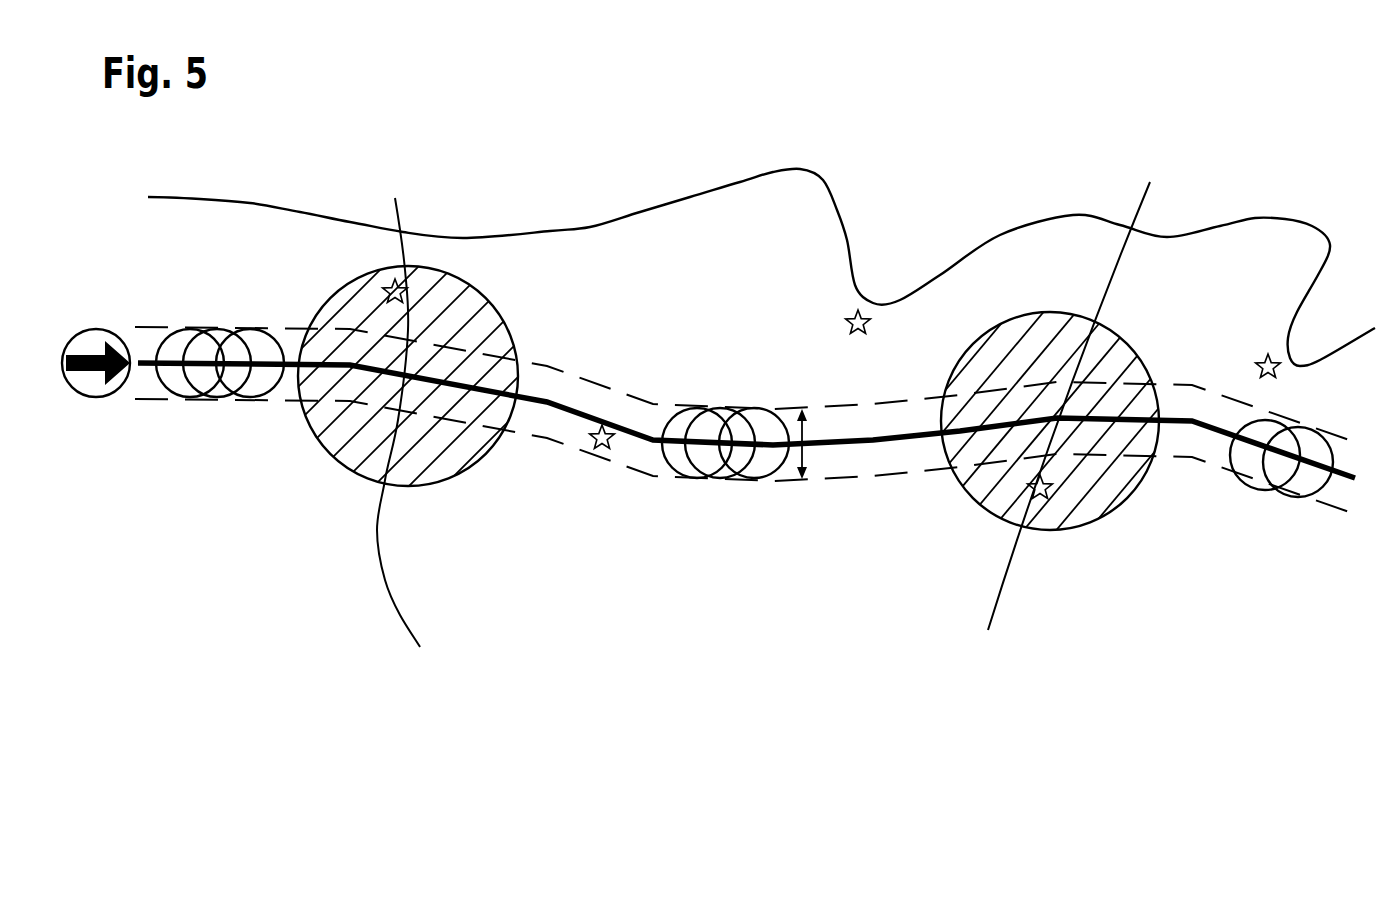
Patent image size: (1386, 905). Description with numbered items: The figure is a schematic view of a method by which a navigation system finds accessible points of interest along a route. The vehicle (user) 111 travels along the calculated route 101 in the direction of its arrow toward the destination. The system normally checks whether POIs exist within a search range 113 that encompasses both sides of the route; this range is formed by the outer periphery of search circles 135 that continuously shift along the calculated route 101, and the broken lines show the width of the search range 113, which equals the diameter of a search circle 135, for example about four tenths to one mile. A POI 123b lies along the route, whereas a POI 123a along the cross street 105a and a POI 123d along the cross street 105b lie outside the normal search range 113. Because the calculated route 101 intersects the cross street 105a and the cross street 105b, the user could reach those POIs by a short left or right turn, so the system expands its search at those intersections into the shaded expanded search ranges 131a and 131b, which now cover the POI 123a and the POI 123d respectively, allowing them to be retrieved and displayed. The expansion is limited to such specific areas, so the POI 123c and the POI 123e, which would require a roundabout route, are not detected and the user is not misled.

The calculated route 101 is at (1188, 427).
The cross street 105a is at (400, 208).
The cross street 105b is at (1137, 210).
The vehicle (user) 111 is at (97, 398).
The search range 113 is at (803, 457).
The POI 123a is at (388, 283).
The POI 123b is at (602, 451).
The POI 123c is at (860, 336).
The POI 123d is at (1047, 500).
The POI 123e is at (1273, 381).
The expanded search range 131a is at (492, 305).
The expanded search range 131b is at (1120, 340).
The search circles 135 is at (248, 337).